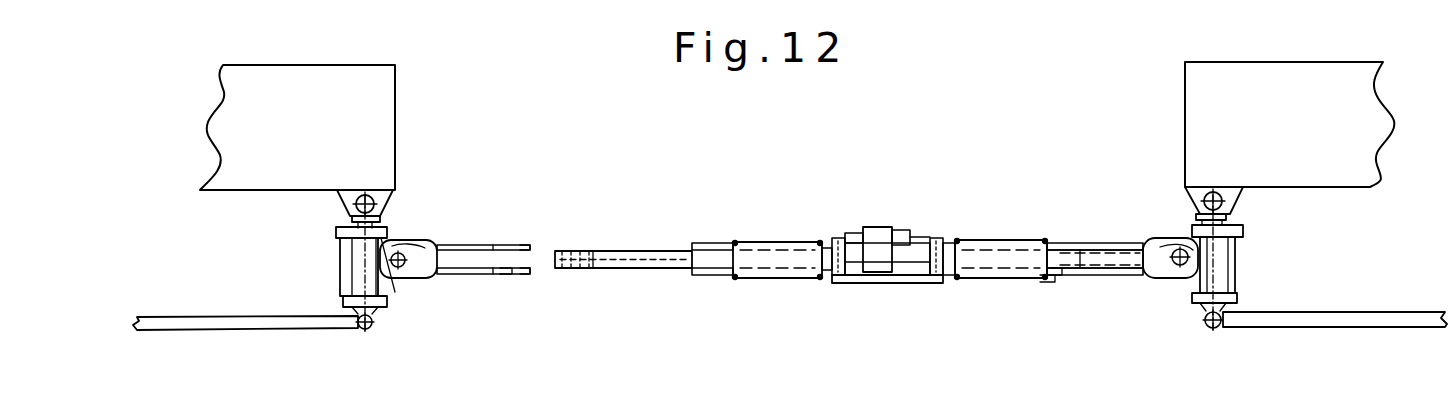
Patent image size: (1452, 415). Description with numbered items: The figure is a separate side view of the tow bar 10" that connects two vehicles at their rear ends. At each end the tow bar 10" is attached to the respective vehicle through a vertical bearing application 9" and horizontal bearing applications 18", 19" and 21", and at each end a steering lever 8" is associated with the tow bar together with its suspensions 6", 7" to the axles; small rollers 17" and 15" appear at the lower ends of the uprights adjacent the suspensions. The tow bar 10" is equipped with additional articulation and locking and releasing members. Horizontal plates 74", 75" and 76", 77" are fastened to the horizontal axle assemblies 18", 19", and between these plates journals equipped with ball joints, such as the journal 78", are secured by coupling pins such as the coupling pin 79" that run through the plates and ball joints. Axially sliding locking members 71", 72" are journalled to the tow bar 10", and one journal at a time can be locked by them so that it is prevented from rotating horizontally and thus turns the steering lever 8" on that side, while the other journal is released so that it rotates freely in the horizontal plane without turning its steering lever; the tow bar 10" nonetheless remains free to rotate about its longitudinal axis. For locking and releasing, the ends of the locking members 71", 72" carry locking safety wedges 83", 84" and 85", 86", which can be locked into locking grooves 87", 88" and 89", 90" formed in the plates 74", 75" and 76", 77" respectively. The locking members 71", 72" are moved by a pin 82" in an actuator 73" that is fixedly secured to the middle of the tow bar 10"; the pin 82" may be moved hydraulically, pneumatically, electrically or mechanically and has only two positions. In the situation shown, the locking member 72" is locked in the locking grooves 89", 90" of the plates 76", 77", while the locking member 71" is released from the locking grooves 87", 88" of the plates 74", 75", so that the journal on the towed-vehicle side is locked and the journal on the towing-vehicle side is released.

The suspension 6 is at (1340, 317).
The suspension 7 is at (210, 323).
The steering lever 8 is at (390, 302).
The vertical bearing application 9 is at (365, 283).
The tow bar 10 is at (680, 272).
The right roller 15 is at (1212, 328).
The left roller 17 is at (365, 332).
The horizontal bearing application 18 is at (1177, 272).
The horizontal bearing application 19 is at (408, 270).
The horizontal bearing application 21 is at (345, 193).
The locking member 71 is at (765, 243).
The locking member 72 is at (990, 243).
The actuator 73 is at (898, 232).
The horizontal plate 74 is at (470, 244).
The horizontal plate 75 is at (510, 277).
The horizontal plate 76 is at (1105, 244).
The horizontal plate 77 is at (1100, 276).
The journal with ball joint 78 is at (592, 250).
The coupling pin 79 is at (402, 240).
The pin 82 is at (922, 240).
The locking safety wedge 83 is at (710, 243).
The locking safety wedge 84 is at (715, 277).
The locking safety wedge 85 is at (1050, 245).
The locking safety wedge 86 is at (1050, 280).
The locking groove 87 is at (538, 246).
The locking groove 88 is at (532, 276).
The locking groove 89 is at (1065, 245).
The locking groove 90 is at (1058, 277).